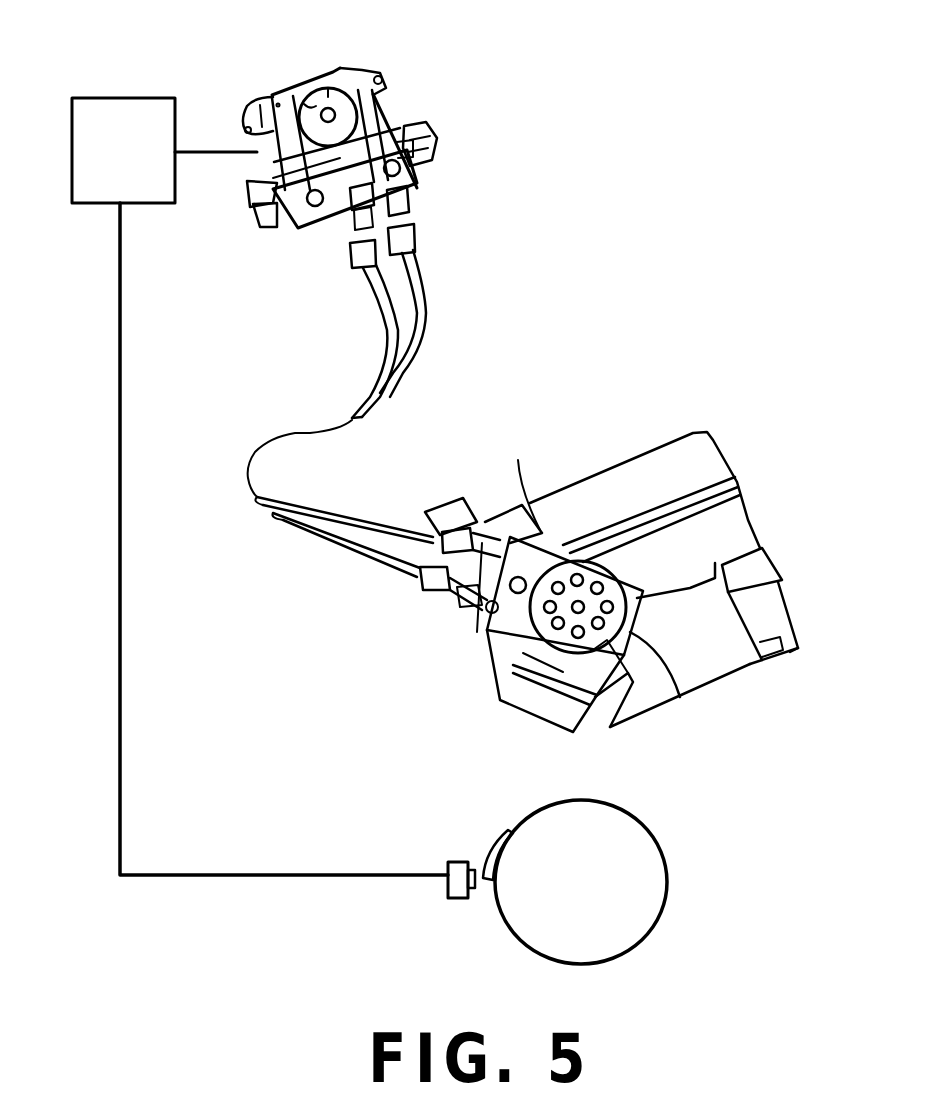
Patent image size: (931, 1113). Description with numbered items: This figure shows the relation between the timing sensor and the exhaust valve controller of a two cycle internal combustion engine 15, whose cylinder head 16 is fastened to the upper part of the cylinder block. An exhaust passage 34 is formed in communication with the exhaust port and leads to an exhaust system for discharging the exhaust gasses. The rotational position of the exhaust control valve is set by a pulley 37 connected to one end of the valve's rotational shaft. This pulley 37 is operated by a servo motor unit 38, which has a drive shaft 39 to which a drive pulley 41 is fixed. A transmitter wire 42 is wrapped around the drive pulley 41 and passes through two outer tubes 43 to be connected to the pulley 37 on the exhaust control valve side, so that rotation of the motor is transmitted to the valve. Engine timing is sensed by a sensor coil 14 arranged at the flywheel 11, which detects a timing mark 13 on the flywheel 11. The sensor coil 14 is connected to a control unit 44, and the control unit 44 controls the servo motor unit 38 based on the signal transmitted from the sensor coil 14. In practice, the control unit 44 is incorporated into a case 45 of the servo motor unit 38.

The flywheel 11 is at (647, 890).
The timing mark 13 is at (493, 837).
The sensor coil 14 is at (457, 862).
The two cycle internal combustion engine 15 is at (753, 510).
The cylinder head 16 is at (600, 478).
The exhaust passage 34 is at (540, 707).
The pulley 37 is at (680, 697).
The servo motor unit 38 is at (356, 134).
The drive shaft 39 is at (327, 75).
The drive pulley 41 is at (300, 85).
The transmitter wire 42 is at (405, 112).
The outer tubes 43 is at (423, 320).
The control unit 44 is at (155, 95).
The case 45 is at (387, 92).